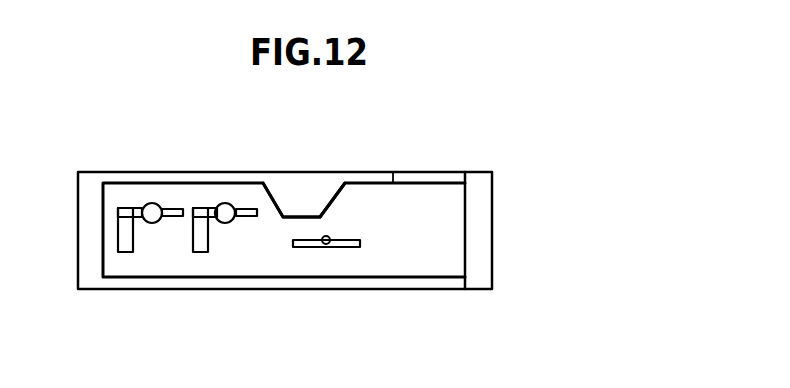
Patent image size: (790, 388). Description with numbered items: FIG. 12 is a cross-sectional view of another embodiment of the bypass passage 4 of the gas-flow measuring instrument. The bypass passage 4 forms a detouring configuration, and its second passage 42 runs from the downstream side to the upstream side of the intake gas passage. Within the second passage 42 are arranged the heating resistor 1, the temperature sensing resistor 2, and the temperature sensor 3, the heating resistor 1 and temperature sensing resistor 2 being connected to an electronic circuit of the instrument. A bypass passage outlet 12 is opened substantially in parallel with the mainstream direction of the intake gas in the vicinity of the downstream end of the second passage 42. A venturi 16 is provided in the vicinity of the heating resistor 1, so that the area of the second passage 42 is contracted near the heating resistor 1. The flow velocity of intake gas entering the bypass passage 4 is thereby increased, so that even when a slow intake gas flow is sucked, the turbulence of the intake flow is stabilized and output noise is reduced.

The heating resistor 1 is at (342, 238).
The temperature sensing resistor 2 is at (225, 203).
The temperature sensor 3 is at (152, 203).
The bypass passage 4 is at (430, 203).
The bypass passage outlet 12 is at (462, 179).
The venturi 16 is at (297, 217).
The second passage 42 is at (250, 267).